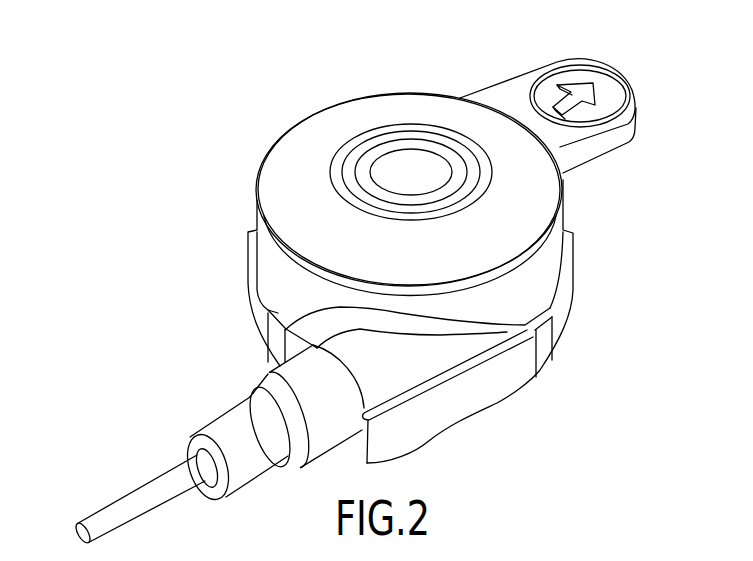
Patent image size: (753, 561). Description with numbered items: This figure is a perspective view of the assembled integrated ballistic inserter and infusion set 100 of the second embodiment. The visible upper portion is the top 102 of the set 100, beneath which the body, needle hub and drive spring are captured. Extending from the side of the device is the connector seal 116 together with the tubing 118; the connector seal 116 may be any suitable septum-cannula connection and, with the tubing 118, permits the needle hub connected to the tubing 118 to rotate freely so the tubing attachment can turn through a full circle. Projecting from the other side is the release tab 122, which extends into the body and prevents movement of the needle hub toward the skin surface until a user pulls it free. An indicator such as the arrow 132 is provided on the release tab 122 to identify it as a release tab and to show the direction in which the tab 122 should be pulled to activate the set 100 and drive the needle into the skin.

The integrated ballistic inserter and infusion set 100 is at (297, 72).
The top 102 is at (297, 140).
The connector seal 116 is at (229, 410).
The tubing 118 is at (123, 497).
The release tab 122 is at (567, 62).
The arrow 132 is at (594, 86).